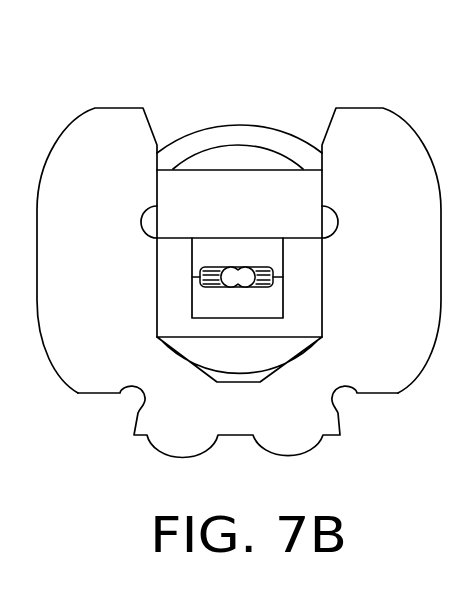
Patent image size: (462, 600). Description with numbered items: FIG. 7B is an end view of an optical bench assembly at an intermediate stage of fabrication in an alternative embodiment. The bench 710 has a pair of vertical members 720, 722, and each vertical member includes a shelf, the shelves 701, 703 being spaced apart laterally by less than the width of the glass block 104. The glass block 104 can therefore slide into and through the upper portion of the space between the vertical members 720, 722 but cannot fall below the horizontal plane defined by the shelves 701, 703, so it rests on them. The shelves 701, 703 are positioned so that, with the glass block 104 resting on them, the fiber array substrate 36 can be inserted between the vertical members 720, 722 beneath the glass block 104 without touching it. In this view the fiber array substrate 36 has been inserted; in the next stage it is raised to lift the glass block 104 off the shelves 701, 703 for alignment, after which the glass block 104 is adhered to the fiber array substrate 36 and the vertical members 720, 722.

The vertical member 722 is at (122, 135).
The vertical member 720 is at (359, 128).
The bench 710 is at (302, 420).
The glass block 104 is at (270, 215).
The shelf 701 is at (155, 257).
The shelf 703 is at (320, 254).
The fiber array substrate 36 is at (252, 317).